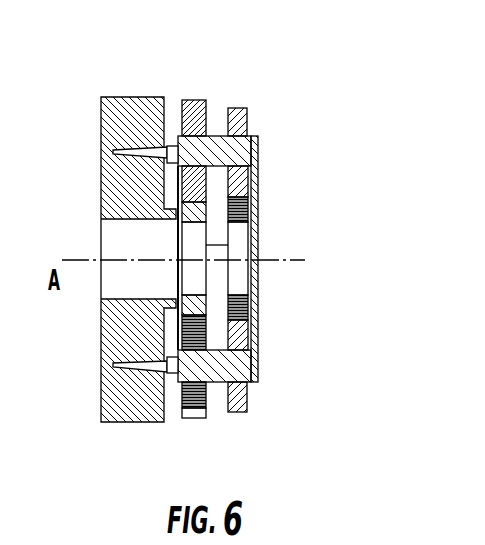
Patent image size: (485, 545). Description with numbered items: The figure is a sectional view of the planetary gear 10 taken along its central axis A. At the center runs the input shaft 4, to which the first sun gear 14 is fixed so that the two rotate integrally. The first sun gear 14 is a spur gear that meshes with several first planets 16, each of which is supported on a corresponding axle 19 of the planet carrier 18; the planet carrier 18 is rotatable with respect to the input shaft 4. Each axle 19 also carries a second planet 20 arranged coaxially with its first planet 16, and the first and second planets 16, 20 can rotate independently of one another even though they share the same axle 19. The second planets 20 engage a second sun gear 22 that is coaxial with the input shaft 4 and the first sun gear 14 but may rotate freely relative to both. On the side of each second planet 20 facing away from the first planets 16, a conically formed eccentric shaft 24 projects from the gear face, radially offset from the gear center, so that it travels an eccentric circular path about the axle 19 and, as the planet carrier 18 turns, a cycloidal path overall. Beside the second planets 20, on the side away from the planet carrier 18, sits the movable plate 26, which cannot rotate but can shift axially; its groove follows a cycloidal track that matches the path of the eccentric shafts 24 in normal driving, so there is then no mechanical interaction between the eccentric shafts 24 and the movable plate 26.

The planetary gear 10 is at (294, 51).
The movable plate 26 is at (106, 94).
The eccentric shaft 24 is at (177, 134).
The second planet 20 is at (199, 103).
The first planet 16 is at (232, 124).
The axle 19 is at (235, 149).
The first sun gear 14 is at (238, 234).
The input shaft 4 is at (215, 265).
The planet carrier 18 is at (258, 307).
The second sun gear 22 is at (188, 277).